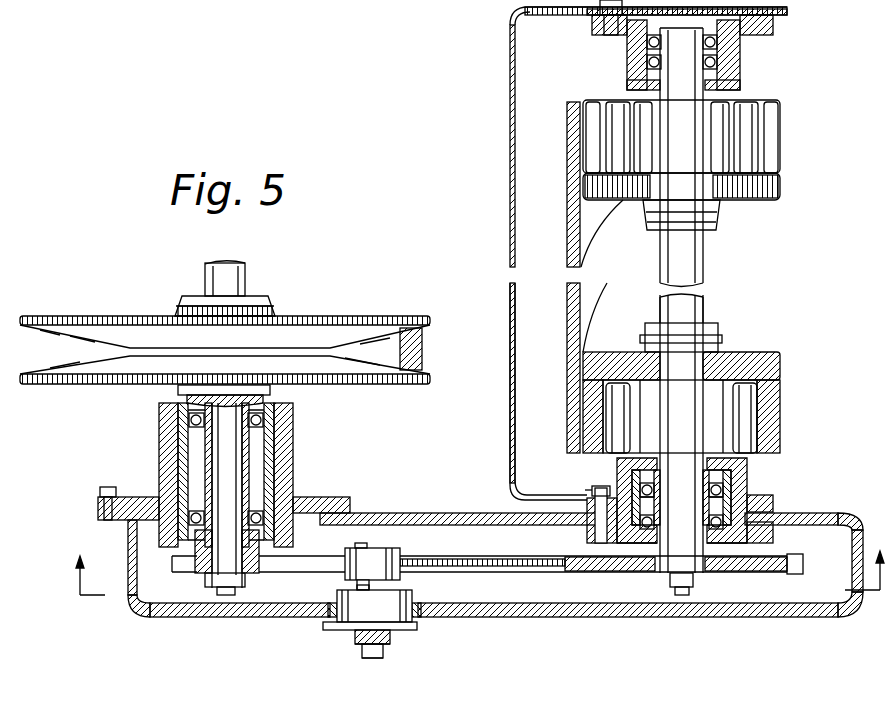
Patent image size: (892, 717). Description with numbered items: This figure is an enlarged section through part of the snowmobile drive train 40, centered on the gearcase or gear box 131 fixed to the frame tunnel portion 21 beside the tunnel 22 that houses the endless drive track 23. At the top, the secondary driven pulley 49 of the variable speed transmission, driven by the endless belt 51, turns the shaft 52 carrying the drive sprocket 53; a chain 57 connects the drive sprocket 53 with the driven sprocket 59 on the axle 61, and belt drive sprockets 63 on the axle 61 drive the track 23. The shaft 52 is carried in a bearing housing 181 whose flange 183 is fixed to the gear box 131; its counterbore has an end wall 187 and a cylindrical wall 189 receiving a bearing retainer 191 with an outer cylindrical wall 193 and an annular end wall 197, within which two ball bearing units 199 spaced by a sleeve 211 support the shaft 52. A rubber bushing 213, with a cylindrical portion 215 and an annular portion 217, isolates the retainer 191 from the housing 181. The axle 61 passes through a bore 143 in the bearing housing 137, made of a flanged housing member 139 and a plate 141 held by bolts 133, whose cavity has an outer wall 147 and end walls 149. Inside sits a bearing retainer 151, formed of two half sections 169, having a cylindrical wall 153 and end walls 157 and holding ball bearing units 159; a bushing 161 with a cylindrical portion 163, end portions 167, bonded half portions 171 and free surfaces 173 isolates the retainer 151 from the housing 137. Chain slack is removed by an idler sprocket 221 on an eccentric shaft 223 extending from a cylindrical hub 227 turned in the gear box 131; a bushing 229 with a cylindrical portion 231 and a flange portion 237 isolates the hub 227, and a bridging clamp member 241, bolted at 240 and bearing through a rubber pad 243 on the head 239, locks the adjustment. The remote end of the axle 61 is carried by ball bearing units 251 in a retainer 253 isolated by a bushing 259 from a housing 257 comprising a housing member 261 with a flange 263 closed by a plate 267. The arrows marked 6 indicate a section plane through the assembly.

The section line 6- 6 is at (476, 583).
The frame tunnel portion 21 is at (510, 117).
The tunnel 22 is at (527, 210).
The endless drive belt or track 23 is at (581, 283).
The power or drive train 40 is at (125, 458).
The secondary driven pulley 49 is at (125, 300).
The endless belt 51 is at (410, 324).
The shaft 52 is at (230, 272).
The drive sprocket 53 is at (180, 575).
The chain 57 is at (478, 553).
The driven sprocket 59 is at (580, 573).
The axle 61 is at (690, 252).
The belt drive sprockets 63 is at (770, 125).
The gearcase or gear box 131 is at (447, 513).
The bolts 133 is at (588, 490).
The bearing housing or mounting structure 137 is at (848, 462).
The flanged housing member 139 is at (778, 504).
The plate 141 is at (775, 532).
The bore 143 is at (715, 565).
The cylindrical outer wall 147 is at (618, 462).
The annular end walls 149 is at (642, 468).
The bearing retainer 151 is at (752, 472).
The cylindrical wall 153 is at (752, 483).
The annular end walls 157 is at (665, 452).
The ball bearing units 159 is at (681, 504).
The bushing 161 is at (748, 497).
The cylindrical portion 163 is at (632, 476).
The end portions 167 is at (640, 545).
The half sections 169 is at (590, 530).
The half portions 171 is at (592, 498).
The free surfaces 173 is at (660, 545).
The bearing housing 181 is at (364, 493).
The flange 183 is at (350, 500).
The end wall 187 is at (188, 550).
The cylindrical wall 189 is at (262, 470).
The bearing retainer 191 is at (272, 432).
The outer cylindrical wall 193 is at (262, 452).
The annular end wall 197 is at (182, 404).
The ball bearing units 199 is at (260, 418).
The sleeve 211 is at (245, 490).
The bushing 213 is at (170, 428).
The cylindrical portion 215 is at (178, 450).
The annular portion 217 is at (170, 540).
The idler sprocket 221 is at (398, 541).
The shaft 223 is at (375, 583).
The cylindrical hub 227 is at (414, 627).
The bushing 229 is at (412, 605).
The cylindrical portion 231 is at (335, 599).
The flange portion 237 is at (325, 625).
The head 239 is at (392, 638).
The bolt 240 is at (375, 659).
The bridging clamp member 241 is at (366, 650).
The pad 243 is at (360, 637).
The ball bearing units 251 is at (742, 70).
The retainer 253 is at (640, 45).
The housing 257 is at (775, 13).
The bushing 259 is at (748, 30).
The housing member 261 is at (628, 75).
The flange 263 is at (600, 30).
The plate 267 is at (600, 18).